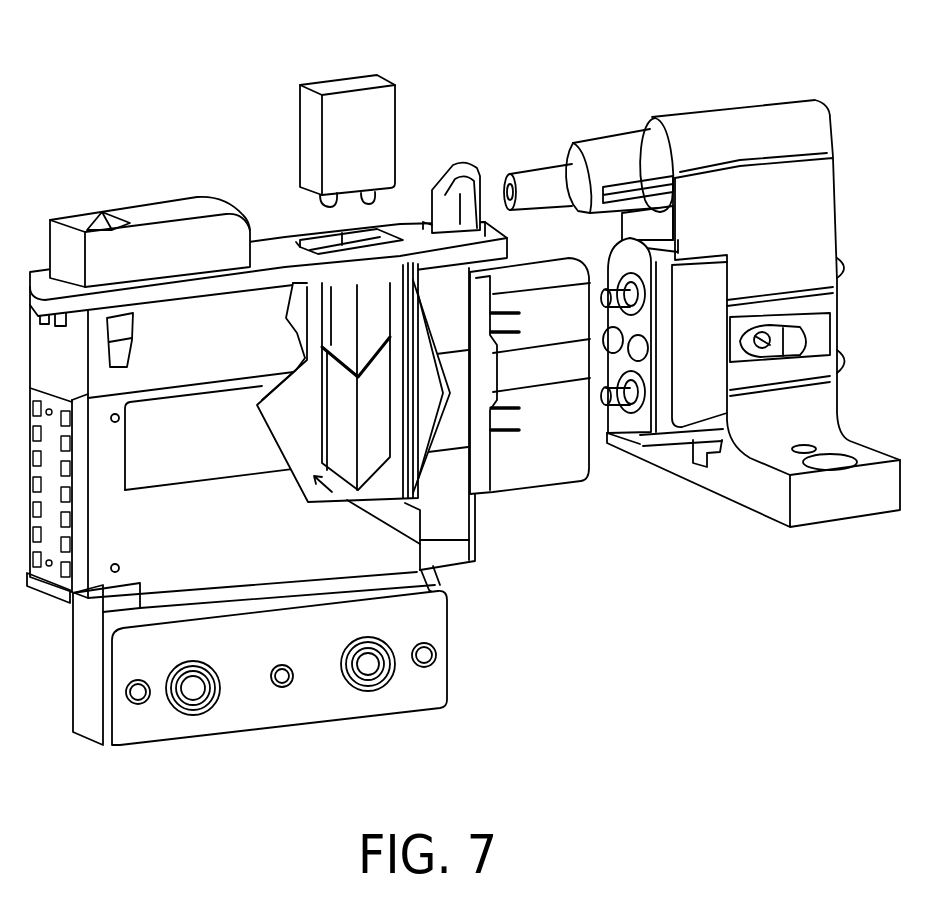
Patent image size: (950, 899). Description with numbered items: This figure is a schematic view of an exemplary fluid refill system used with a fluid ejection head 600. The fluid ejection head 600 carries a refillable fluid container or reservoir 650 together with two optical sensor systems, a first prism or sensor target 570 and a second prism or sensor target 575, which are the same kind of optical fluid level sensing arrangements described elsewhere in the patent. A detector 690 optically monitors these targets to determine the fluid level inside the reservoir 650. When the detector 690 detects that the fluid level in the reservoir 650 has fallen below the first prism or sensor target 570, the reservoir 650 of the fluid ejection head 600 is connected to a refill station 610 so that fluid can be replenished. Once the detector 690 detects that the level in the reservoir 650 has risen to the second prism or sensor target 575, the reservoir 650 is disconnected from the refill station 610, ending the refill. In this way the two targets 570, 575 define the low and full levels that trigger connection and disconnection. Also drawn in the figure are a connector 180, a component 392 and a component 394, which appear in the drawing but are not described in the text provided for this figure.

The fluid ejection head 600 is at (73, 116).
The detector 690 is at (337, 83).
The photodiode leads 392 is at (318, 200).
The mounting plate 394 is at (402, 195).
The second prism or sensor target 575 is at (377, 313).
The first prism or sensor target 570 is at (372, 452).
The refillable fluid container or reservoir 650 is at (420, 543).
The connector 180 is at (538, 268).
The refill station 610 is at (712, 118).